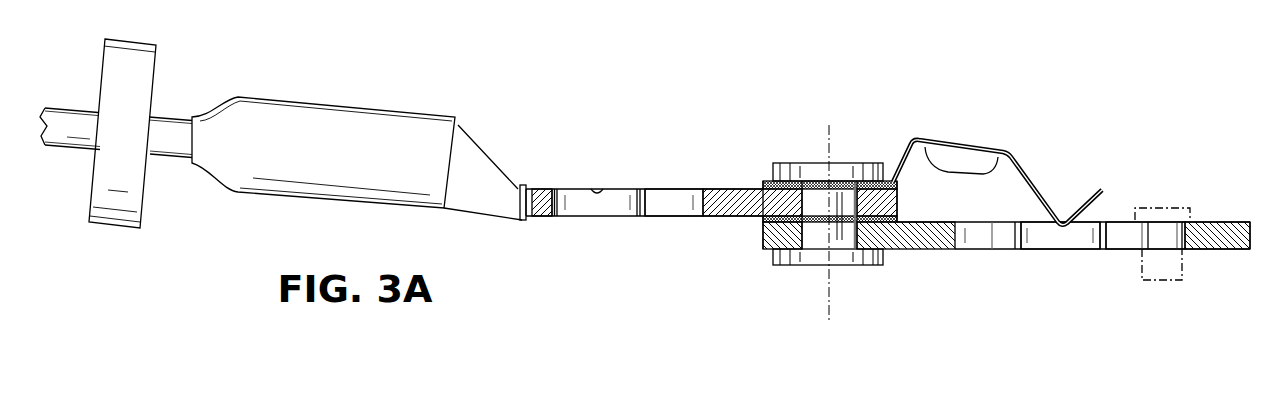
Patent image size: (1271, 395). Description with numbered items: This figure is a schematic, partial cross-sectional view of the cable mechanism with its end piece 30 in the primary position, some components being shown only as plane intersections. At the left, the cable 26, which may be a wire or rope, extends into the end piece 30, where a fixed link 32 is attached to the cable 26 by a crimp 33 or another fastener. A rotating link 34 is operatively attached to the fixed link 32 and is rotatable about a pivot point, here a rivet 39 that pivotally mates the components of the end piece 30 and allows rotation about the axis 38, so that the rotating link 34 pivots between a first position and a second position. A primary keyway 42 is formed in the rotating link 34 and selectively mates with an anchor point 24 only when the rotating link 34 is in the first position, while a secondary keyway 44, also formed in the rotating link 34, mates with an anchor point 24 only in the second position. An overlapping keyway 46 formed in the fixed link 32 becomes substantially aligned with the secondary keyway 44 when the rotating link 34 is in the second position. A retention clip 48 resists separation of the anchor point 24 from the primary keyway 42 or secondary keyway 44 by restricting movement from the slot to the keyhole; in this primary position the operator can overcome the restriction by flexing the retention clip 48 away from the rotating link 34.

The anchor point 24 is at (1167, 282).
The cable 26 is at (171, 130).
The end piece 30 is at (701, 106).
The fixed link 32 is at (543, 218).
The crimp 33 is at (255, 165).
The rotating link 34 is at (765, 250).
The axis 38 is at (832, 307).
The rivet 39 is at (853, 165).
The primary keyway 42 is at (1122, 232).
The secondary keyway 44 is at (995, 240).
The overlapping keyway 46 is at (677, 208).
The retention clip 48 is at (1032, 183).